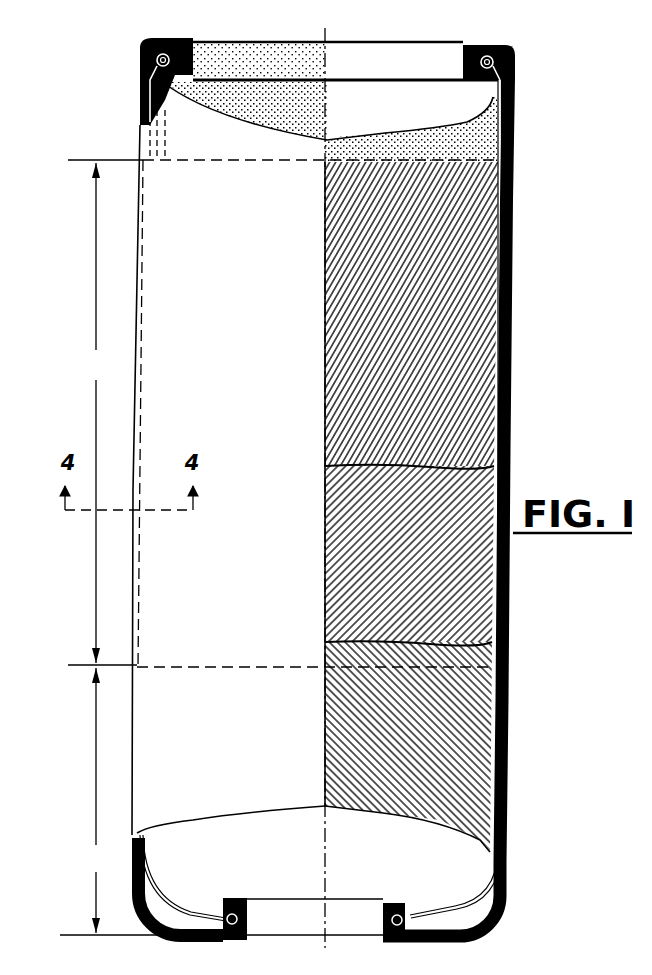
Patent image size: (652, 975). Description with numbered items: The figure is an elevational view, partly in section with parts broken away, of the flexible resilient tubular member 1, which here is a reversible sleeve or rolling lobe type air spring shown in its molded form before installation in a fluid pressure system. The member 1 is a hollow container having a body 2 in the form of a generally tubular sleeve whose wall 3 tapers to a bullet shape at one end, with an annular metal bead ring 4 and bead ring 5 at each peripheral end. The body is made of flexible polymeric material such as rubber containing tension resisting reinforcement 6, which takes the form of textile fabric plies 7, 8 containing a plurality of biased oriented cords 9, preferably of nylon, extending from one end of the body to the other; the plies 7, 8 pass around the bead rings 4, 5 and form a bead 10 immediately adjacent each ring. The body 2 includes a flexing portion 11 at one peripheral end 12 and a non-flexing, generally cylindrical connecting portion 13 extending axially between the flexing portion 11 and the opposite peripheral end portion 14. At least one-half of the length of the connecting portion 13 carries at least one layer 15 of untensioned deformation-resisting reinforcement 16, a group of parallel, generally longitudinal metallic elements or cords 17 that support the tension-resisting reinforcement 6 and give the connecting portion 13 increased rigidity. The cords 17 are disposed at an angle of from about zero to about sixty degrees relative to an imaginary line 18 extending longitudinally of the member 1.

The flexible resilient tubular member 1 is at (522, 136).
The body 2 is at (173, 140).
The wall 3 is at (160, 305).
The bead ring 4 is at (150, 48).
The bead ring 5 is at (230, 907).
The tension resisting reinforcement 6 is at (513, 145).
The fabric ply 7 is at (427, 590).
The fabric ply 8 is at (442, 743).
The biased oriented cords 9 is at (362, 550).
The bead 10 is at (177, 47).
The flexing portion 11 is at (96, 800).
The peripheral end 12 is at (328, 917).
The connecting portion 13 is at (105, 412).
The opposite peripheral end portion 14 is at (385, 63).
The layer 15 is at (508, 337).
The untensioned deformation-resisting reinforcement 16 is at (495, 248).
The cords 17 is at (470, 353).
The imaginary line 18 is at (325, 95).